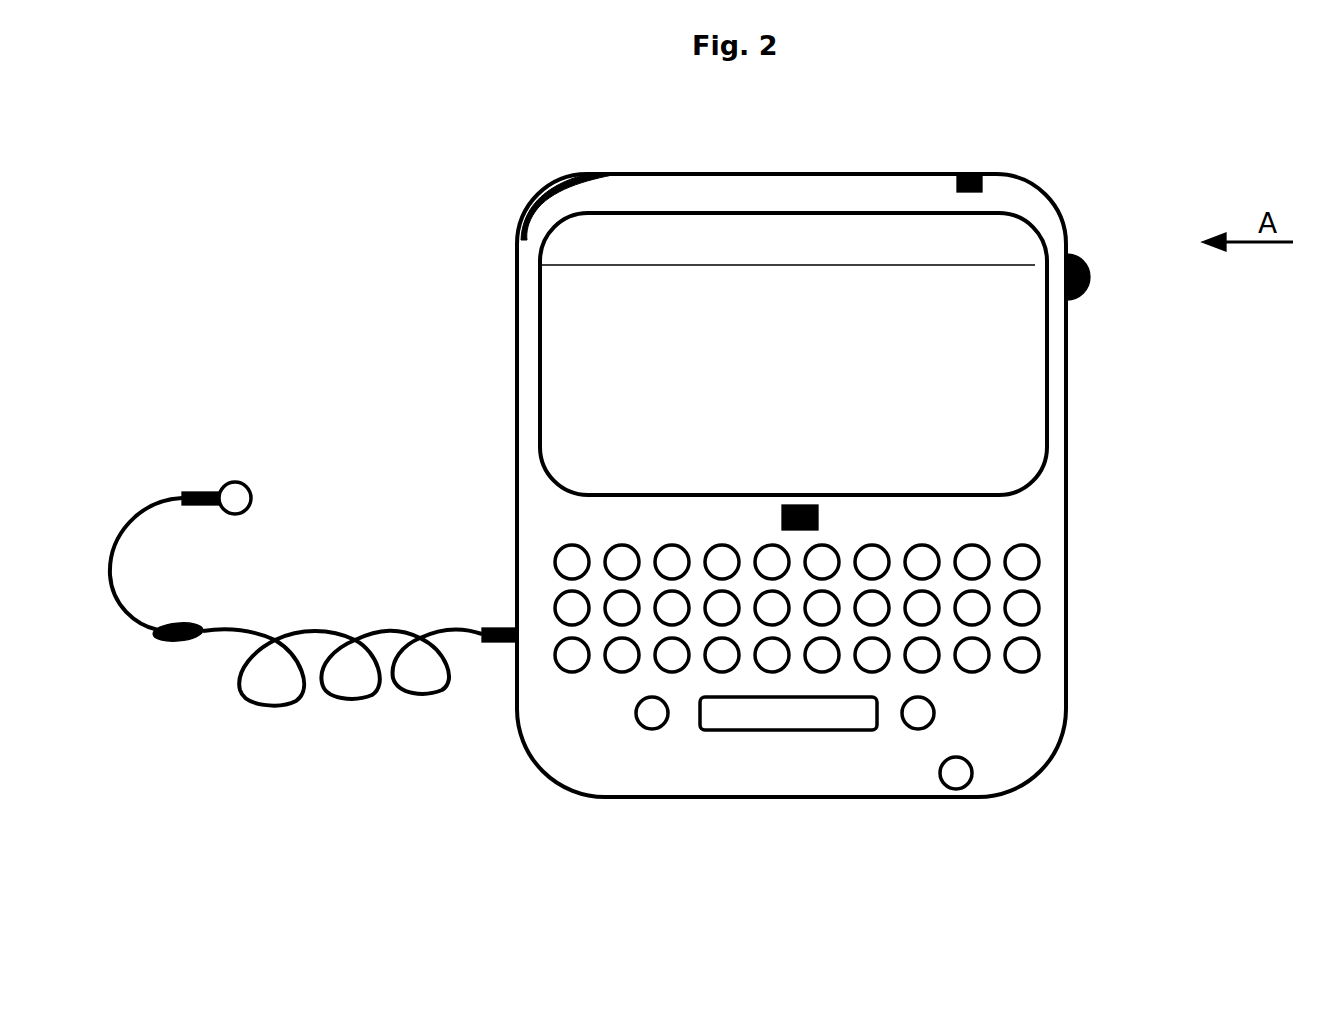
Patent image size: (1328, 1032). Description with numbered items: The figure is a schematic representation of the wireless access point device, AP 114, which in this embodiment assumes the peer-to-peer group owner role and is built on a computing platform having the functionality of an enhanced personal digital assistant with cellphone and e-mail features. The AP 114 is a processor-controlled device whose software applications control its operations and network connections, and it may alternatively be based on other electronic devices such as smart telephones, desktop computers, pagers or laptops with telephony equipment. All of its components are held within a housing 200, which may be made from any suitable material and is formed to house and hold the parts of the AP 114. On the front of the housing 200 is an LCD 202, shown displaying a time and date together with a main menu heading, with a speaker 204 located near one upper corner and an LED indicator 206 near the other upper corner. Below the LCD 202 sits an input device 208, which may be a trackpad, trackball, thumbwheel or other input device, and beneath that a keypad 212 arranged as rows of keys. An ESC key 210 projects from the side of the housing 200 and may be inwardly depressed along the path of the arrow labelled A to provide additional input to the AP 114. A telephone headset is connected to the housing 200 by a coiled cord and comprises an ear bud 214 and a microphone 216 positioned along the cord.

The AP 114 is at (709, 848).
The housing 200 is at (1025, 717).
The LCD 202 is at (622, 353).
The speaker 204 is at (529, 203).
The LED indicator 206 is at (1013, 178).
The input device 208 is at (828, 518).
The ESC key 210 is at (1107, 275).
The keypad 212 is at (1025, 530).
The ear bud 214 is at (260, 493).
The microphone 216 is at (203, 620).